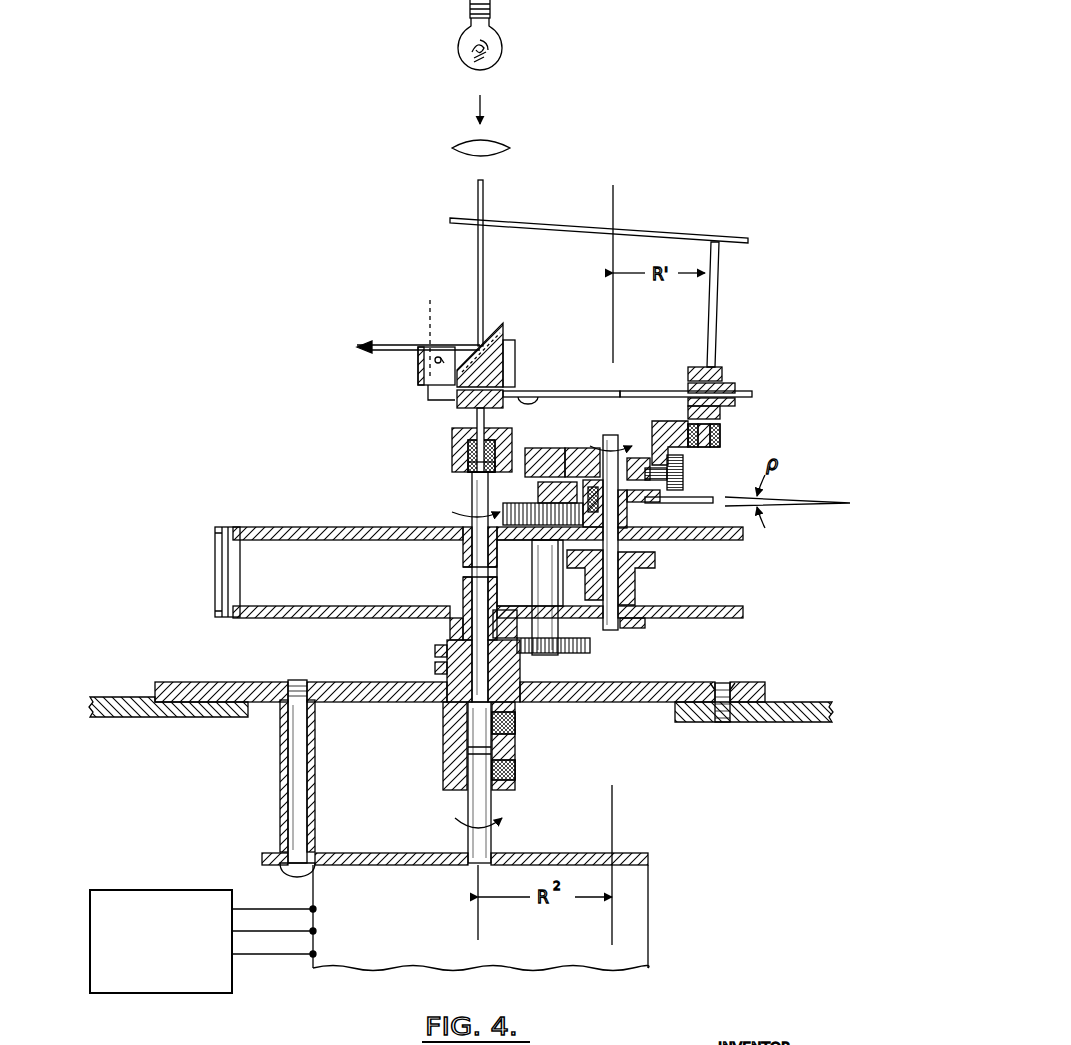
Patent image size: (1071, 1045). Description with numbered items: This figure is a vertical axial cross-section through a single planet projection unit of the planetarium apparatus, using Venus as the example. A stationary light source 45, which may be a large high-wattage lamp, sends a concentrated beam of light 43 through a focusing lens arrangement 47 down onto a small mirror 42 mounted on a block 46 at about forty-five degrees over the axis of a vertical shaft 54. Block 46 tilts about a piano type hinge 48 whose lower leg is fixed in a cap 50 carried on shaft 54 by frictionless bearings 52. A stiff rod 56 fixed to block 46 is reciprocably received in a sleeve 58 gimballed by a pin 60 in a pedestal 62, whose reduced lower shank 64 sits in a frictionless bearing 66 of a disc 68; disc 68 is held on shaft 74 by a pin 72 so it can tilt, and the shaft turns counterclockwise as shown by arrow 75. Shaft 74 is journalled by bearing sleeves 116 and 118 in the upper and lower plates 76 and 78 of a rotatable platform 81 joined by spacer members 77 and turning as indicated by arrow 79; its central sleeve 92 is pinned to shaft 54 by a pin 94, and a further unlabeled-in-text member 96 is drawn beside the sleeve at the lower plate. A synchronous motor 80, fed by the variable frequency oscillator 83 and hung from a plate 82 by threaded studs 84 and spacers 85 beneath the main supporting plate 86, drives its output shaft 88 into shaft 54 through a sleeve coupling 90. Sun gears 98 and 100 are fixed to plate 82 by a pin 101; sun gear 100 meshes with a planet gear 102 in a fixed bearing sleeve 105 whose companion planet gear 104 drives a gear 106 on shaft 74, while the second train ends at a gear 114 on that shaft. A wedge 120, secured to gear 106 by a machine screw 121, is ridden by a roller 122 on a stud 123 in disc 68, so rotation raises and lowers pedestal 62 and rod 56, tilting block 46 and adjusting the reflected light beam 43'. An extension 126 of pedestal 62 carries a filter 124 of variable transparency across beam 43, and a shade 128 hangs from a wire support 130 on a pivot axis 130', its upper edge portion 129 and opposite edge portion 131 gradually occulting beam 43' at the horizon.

The light source 45 is at (462, 46).
The focusing lens arrangement 47 is at (497, 140).
The concentrated beam of light 43 is at (461, 263).
The filter 124 is at (655, 238).
The extension of pedestal 126 is at (713, 318).
The pedestal 62 is at (693, 367).
The sleeve 58 is at (733, 384).
The rod 56 is at (665, 391).
The edge portion 131 is at (534, 398).
The pin 60 is at (735, 402).
The frictionless bearing 66 is at (690, 423).
The reduced lower shank 64 is at (720, 435).
The shaft 74 is at (609, 435).
The pin 72 is at (630, 455).
The arrow 75 is at (602, 452).
The disc 68 is at (528, 449).
The machine screw 121 is at (568, 478).
The wedge 120 is at (540, 491).
The planet gear 104 is at (540, 554).
The roller 122 is at (672, 503).
The stud 123 is at (684, 472).
The arrow 79 is at (466, 512).
The cap 50 is at (455, 448).
The frictionless bearings 52 is at (465, 470).
The piano type hinge 48 is at (460, 408).
The mirror 42 is at (487, 336).
The block 46 is at (508, 368).
The reflected light beam 43' is at (407, 334).
The shade 128 is at (465, 341).
The upper edge portion 129 is at (418, 347).
The pivot axis 130' is at (428, 328).
The wire support 130 is at (427, 408).
The rotatable platform 81 is at (305, 478).
The upper plate 76 is at (258, 527).
The gear 106 is at (660, 540).
The spacer members 77 is at (213, 580).
The lower plate 78 is at (290, 606).
The central sleeve 92 is at (462, 590).
The pin 94 is at (462, 572).
The vertical shaft 54 is at (471, 548).
The bracket 96 is at (450, 626).
The pin 101 is at (435, 662).
The sun gear 98 is at (520, 690).
The sun gear 100 is at (520, 645).
The planet gear 102 is at (592, 645).
The fixed bearing sleeve 105 is at (562, 652).
The bearing sleeve 116 is at (587, 552).
The gear 114 is at (640, 568).
The bearing sleeve 118 is at (645, 628).
The plate 82 is at (262, 682).
The main supporting plate 86 is at (196, 717).
The threaded studs 84 is at (296, 778).
The spacers 85 is at (280, 804).
The sleeve coupling 90 is at (443, 739).
The output shaft 88 is at (468, 809).
The synchronous motor 80 is at (423, 909).
The variable frequency oscillator 83 is at (140, 993).